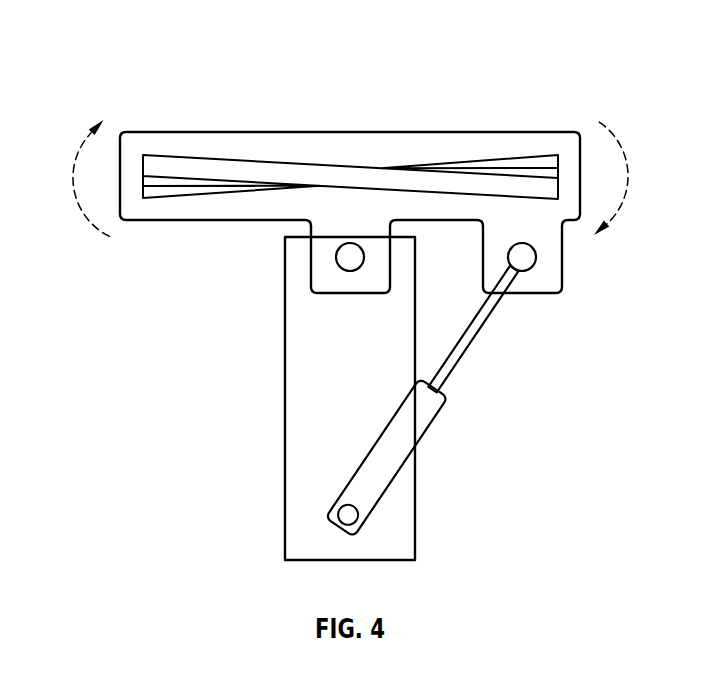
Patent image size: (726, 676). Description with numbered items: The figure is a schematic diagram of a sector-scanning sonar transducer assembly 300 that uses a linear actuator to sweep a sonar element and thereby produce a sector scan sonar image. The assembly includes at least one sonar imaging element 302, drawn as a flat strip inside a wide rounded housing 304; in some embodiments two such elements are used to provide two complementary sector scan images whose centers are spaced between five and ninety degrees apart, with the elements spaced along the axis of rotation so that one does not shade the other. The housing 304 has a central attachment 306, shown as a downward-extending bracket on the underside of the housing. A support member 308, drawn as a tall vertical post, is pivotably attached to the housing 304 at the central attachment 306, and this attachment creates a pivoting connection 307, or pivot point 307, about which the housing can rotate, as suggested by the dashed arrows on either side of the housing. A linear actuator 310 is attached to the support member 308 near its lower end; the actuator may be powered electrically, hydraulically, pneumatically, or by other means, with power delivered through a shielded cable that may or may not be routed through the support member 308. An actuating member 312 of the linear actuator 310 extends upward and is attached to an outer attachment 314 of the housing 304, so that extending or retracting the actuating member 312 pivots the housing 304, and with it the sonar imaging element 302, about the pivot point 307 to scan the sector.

The sector-scanning sonar transducer assembly 300 is at (620, 47).
The sonar imaging element 302 is at (196, 156).
The housing 304 is at (407, 132).
The central attachment 306 is at (311, 250).
The pivoting connection 307 is at (338, 268).
The support member 308 is at (284, 397).
The linear actuator 310 is at (435, 414).
The actuating member 312 is at (473, 343).
The outer attachment 314 is at (563, 285).